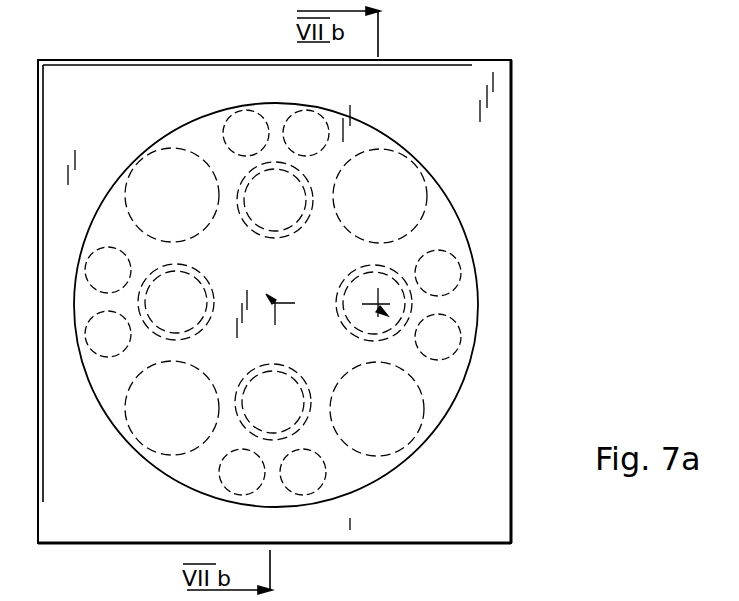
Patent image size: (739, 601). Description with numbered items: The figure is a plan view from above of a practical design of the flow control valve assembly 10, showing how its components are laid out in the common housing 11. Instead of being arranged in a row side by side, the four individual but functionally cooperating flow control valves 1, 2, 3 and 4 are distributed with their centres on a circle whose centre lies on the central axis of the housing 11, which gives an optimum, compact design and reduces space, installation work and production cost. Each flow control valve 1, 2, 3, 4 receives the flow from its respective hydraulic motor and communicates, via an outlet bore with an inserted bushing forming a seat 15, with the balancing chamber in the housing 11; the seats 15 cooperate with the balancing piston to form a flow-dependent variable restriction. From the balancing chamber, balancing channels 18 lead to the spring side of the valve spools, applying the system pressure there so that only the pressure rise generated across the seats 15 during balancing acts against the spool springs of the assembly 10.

The flow control valve 1 is at (165, 170).
The flow control valve 2 is at (376, 164).
The flow control valve 3 is at (387, 425).
The flow control valve 4 is at (164, 432).
The flow control valve assembly 10 is at (516, 221).
The housing 11 is at (500, 327).
The seat 15 is at (170, 333).
The balancing channel 18 is at (438, 263).